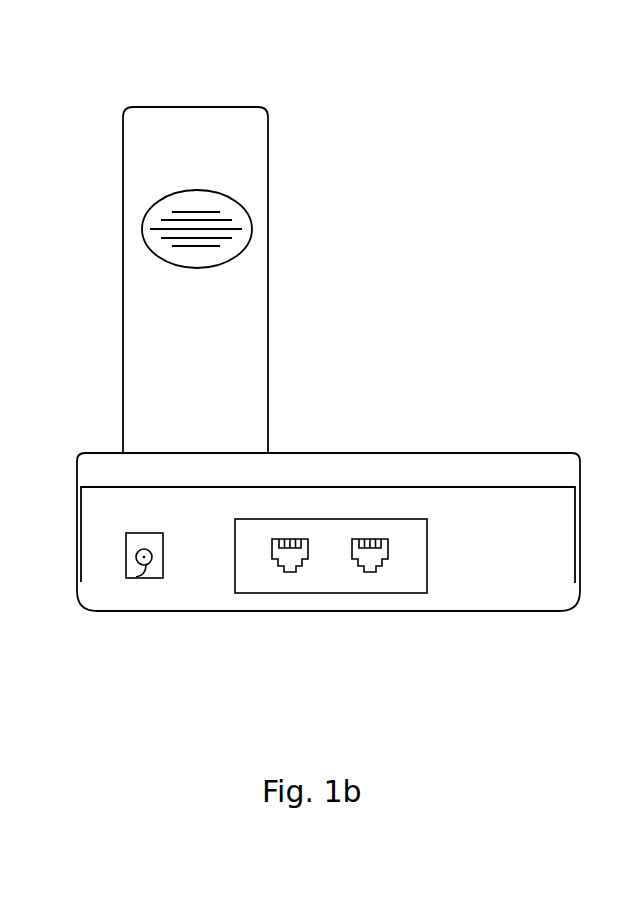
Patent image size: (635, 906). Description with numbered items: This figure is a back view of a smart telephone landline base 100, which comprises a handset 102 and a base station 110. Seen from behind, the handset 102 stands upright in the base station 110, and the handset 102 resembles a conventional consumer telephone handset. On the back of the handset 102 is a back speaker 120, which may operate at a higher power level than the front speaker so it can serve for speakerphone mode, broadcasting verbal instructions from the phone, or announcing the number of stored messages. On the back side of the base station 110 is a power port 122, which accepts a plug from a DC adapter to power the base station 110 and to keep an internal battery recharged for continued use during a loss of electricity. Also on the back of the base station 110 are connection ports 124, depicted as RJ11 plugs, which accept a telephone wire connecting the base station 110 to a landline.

The smart telephone landline base 100 is at (366, 323).
The handset 102 is at (193, 107).
The base station 110 is at (478, 452).
The back speaker 120 is at (243, 207).
The power port 122 is at (139, 578).
The connection ports 124 is at (448, 559).